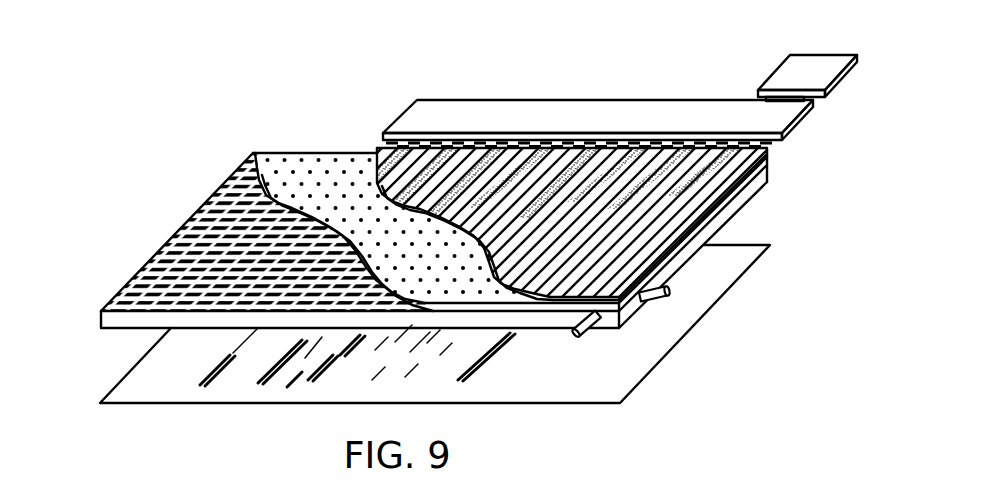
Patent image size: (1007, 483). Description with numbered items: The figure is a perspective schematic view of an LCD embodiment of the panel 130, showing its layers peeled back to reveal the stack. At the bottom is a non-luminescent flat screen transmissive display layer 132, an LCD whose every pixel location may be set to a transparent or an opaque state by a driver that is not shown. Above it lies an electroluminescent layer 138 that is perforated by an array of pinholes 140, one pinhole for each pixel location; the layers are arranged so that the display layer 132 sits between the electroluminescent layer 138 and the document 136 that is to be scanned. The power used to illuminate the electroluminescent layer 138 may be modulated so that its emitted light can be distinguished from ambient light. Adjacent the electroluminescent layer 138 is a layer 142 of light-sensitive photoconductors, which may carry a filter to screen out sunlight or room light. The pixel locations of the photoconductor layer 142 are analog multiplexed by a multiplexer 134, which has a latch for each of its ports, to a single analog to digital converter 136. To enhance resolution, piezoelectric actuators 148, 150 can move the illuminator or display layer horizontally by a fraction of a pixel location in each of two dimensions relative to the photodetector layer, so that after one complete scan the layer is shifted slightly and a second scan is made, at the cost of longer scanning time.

The panel 130 is at (780, 164).
The non-luminescent flat screen transmissive display layer 132 is at (88, 323).
The multiplexer 134 is at (613, 115).
The document 136 is at (722, 297).
The electroluminescent layer 138 is at (275, 163).
The pinholes 140 is at (328, 167).
The layer of light-sensitive photoconductors 142 is at (382, 147).
The piezoelectric actuator 148 is at (576, 340).
The piezoelectric actuator 150 is at (656, 300).